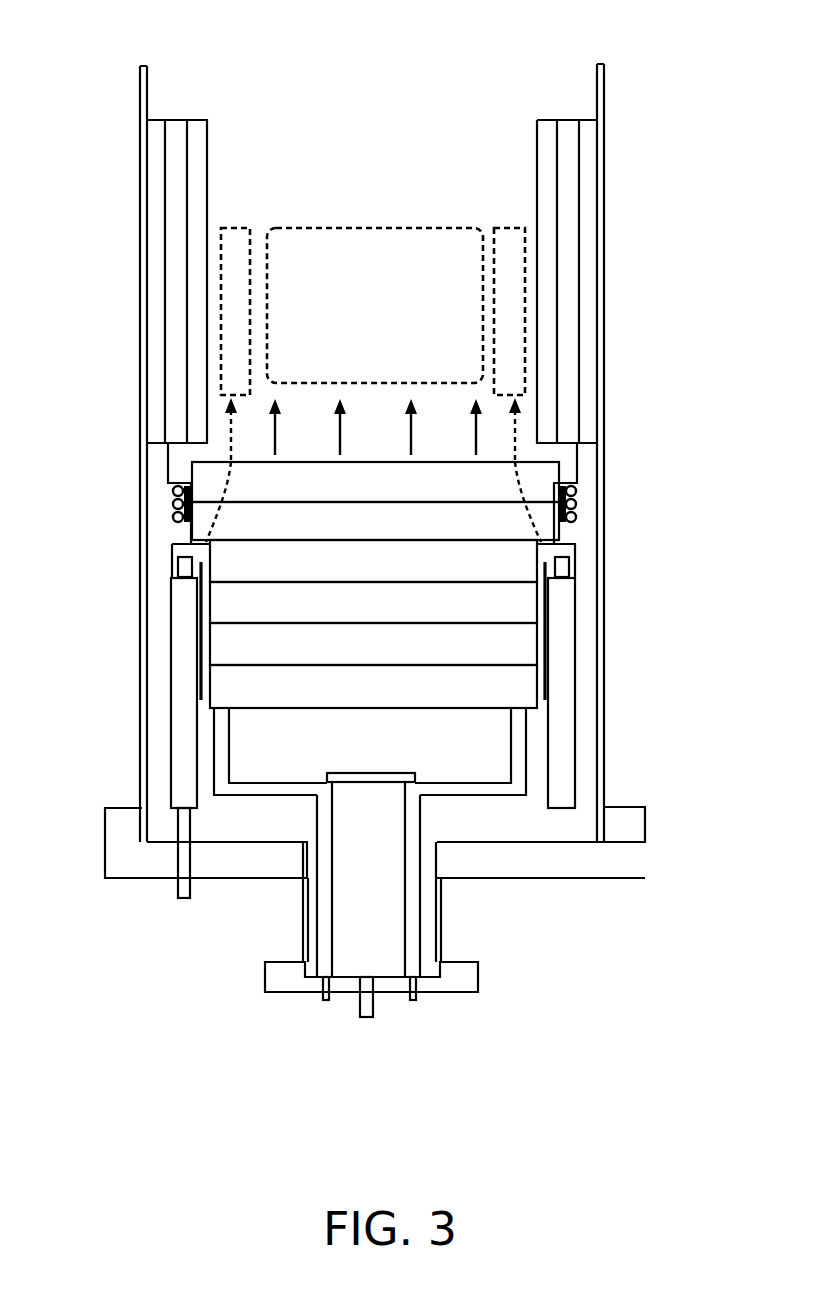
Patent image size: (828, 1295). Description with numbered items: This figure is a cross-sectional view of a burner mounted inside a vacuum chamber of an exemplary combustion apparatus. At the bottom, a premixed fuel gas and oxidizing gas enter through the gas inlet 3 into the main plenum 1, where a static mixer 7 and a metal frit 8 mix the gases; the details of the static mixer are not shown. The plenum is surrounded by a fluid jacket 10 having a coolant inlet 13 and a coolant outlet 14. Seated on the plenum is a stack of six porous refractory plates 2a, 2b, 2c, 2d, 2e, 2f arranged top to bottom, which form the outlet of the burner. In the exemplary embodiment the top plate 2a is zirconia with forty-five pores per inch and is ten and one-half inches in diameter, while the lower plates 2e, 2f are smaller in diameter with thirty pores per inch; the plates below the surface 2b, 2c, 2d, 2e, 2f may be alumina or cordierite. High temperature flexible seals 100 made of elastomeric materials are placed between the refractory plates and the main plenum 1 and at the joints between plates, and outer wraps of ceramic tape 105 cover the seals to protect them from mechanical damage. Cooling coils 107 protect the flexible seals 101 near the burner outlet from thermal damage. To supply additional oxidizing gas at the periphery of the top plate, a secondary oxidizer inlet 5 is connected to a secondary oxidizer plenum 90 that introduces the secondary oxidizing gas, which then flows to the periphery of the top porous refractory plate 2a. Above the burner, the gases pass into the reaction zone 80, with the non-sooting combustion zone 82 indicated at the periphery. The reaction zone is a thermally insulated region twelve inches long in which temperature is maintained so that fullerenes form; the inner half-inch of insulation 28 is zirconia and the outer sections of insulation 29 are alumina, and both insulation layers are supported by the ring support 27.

The plenum 1 is at (245, 745).
The top porous refractory plate 2a is at (375, 482).
The porous refractory plate 2b is at (375, 521).
The porous refractory plate 2c is at (373, 561).
The porous refractory plate 2d is at (373, 602).
The lower porous refractory plate 2e is at (373, 644).
The lower porous refractory plate 2f is at (373, 686).
The gas inlet 3 is at (366, 1038).
The secondary oxidizer inlet 5 is at (183, 920).
The static mixer 7 is at (377, 903).
The metal frit 8 is at (372, 781).
The fluid jacket 10 is at (527, 763).
The coolant inlet 13 is at (413, 1017).
The coolant outlet 14 is at (325, 1004).
The ring support 27 is at (567, 463).
The inner insulation 28 is at (208, 118).
The outer insulation 29 is at (166, 120).
The reaction zone 80 is at (358, 335).
The non-sooting combustion zone 82 is at (517, 230).
The secondary oxidizer plenum 90 is at (562, 632).
The flexible seals 100 is at (213, 712).
The flexible seals near burner outlet 101 is at (187, 523).
The ceramic tape wraps 105 is at (197, 598).
The cooling coils 107 is at (175, 508).